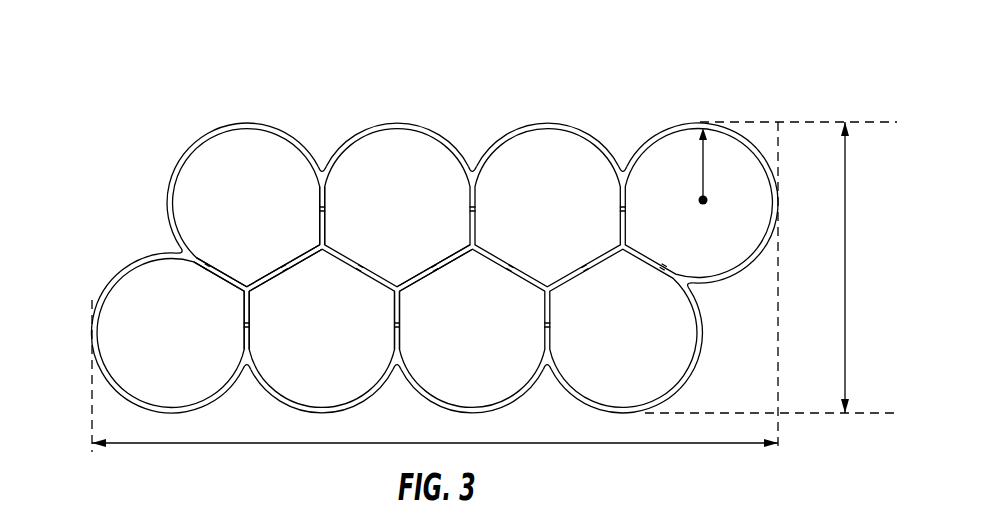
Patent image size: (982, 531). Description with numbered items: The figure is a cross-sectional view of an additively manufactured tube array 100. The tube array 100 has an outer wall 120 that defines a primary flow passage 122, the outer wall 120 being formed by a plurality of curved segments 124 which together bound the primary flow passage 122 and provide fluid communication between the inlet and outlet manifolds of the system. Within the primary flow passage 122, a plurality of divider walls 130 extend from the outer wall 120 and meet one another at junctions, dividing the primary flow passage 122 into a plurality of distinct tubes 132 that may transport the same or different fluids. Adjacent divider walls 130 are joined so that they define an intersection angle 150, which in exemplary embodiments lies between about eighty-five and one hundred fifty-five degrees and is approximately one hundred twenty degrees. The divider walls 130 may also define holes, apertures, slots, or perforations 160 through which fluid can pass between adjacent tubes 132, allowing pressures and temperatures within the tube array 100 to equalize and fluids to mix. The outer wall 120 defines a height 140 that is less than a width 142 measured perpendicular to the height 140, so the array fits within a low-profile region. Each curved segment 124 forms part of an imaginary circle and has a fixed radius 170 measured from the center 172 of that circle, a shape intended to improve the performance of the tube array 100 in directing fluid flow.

The tube array 100 is at (99, 74).
The outer wall 120 is at (597, 122).
The primary flow passage 122 is at (408, 142).
The curved segments 124 is at (206, 132).
The divider walls 130 is at (323, 208).
The tubes 132 is at (560, 218).
The height 140 is at (846, 248).
The width 142 is at (598, 444).
The intersection angle 150 is at (279, 290).
The perforations 160 is at (443, 285).
The fixed radius 170 is at (700, 172).
The center 172 is at (707, 199).